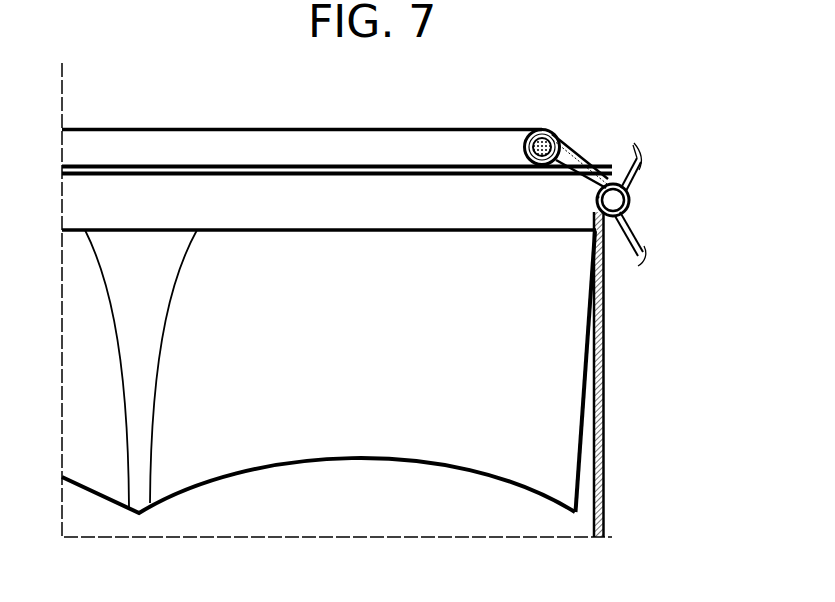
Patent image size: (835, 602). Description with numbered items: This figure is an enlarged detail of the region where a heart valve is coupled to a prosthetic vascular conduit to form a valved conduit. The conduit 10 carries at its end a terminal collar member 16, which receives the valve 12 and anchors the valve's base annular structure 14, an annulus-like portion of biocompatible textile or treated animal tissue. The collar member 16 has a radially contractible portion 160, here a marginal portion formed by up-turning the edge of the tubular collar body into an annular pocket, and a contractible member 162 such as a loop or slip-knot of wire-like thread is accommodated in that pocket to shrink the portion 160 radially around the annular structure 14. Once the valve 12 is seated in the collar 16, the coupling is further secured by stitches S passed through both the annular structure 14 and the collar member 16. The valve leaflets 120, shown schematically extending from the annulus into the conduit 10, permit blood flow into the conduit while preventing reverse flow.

The prosthetic vascular conduit 10 is at (608, 497).
The valve 12 is at (536, 398).
The base annular structure 14 is at (628, 182).
The terminal collar member 16 is at (629, 204).
The valve leaflets 120 is at (293, 443).
The radially contractible portion 160 is at (553, 117).
The contractible member 162 is at (577, 133).
The stitches S is at (598, 197).